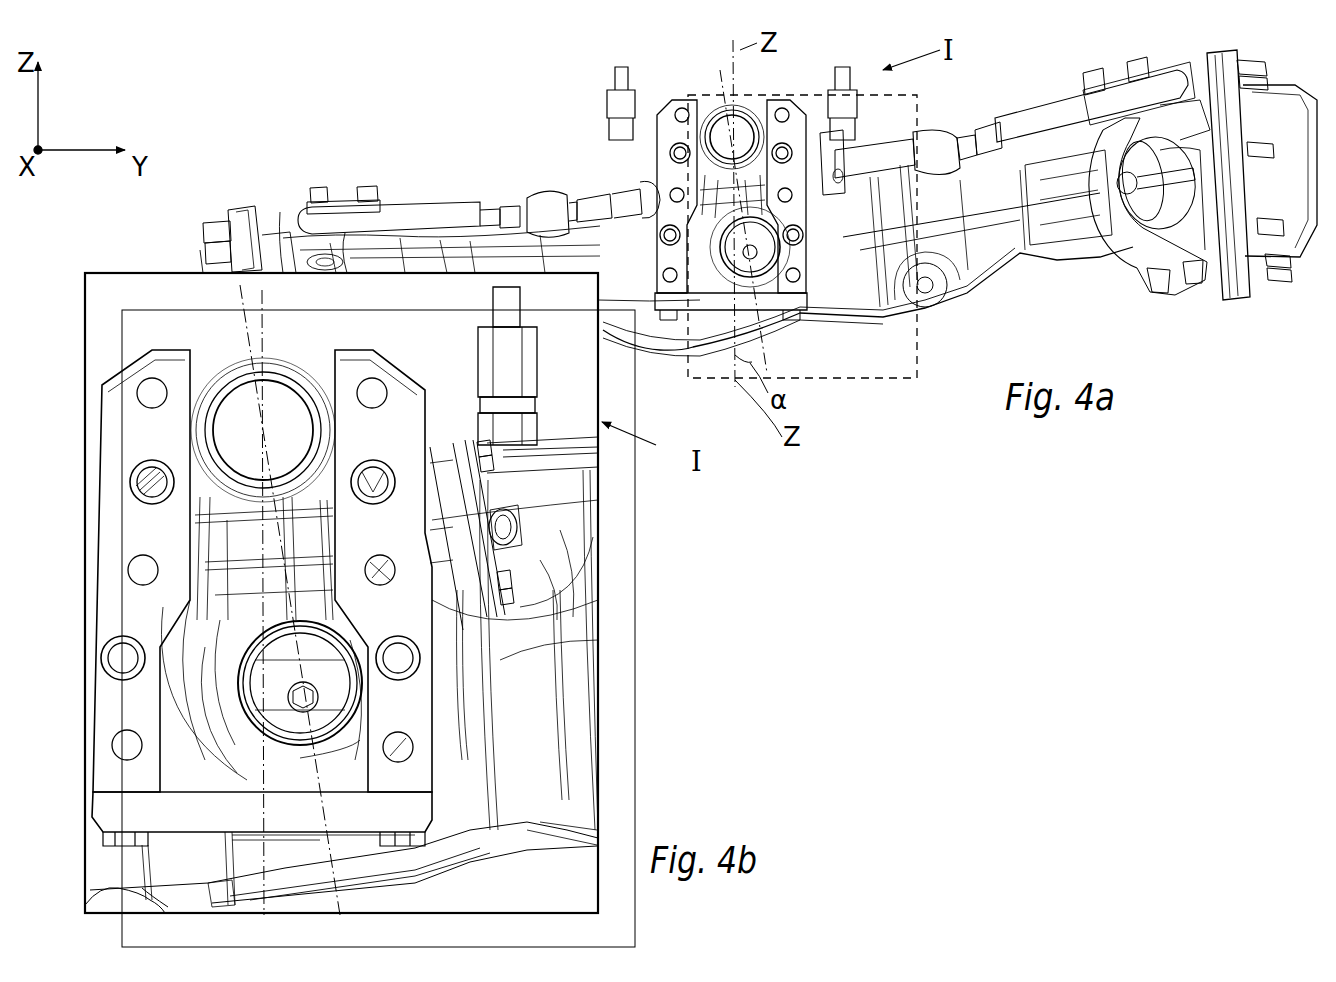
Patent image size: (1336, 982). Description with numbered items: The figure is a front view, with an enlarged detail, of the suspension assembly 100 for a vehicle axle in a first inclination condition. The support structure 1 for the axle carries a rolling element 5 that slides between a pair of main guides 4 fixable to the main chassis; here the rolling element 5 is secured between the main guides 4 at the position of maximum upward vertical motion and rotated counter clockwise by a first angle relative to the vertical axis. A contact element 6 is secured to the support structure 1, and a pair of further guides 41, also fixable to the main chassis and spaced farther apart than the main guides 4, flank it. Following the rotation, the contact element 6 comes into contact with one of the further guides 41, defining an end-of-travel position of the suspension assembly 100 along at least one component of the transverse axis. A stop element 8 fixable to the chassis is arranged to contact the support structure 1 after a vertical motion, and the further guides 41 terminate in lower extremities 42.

In FIG. 4A, the support structure 1 is at (1005, 257).
In FIG. 4B, the support structure 1 is at (523, 837).
In FIG. 4A, the main guides 4 is at (770, 214).
In FIG. 4B, the main guides 4 is at (459, 580).
In FIG. 4A, the rolling element 5 is at (740, 115).
In FIG. 4B, the rolling element 5 is at (283, 380).
In FIG. 4A, the contact element 6 is at (727, 265).
In FIG. 4B, the contact element 6 is at (365, 695).
In FIG. 4B, the stop element 8 is at (530, 450).
In FIG. 4A, the further guides 41 is at (797, 283).
In FIG. 4B, the further guides 41 is at (415, 598).
In FIG. 4B, the lower extremities 42 is at (385, 772).
In FIG. 4A, the suspension assembly 100 is at (1100, 267).